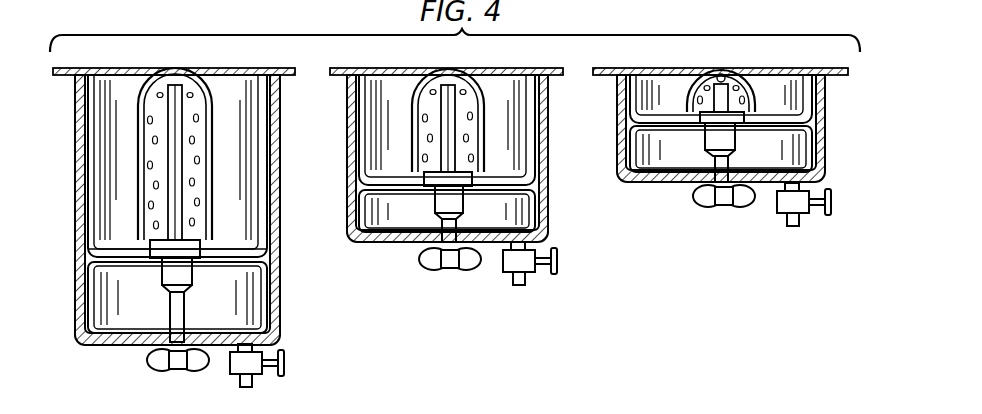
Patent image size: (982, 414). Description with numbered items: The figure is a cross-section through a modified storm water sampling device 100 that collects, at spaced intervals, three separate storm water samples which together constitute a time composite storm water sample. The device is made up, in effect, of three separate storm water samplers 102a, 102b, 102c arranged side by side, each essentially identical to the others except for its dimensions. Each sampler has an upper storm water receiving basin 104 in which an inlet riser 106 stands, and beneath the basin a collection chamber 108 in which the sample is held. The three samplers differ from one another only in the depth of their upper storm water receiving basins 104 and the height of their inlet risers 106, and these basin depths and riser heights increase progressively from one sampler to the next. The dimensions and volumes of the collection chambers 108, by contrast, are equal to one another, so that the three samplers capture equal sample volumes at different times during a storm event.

The modified storm water sampling device 100 is at (772, 18).
The storm water sampler 102a is at (826, 125).
The storm water sampler 102b is at (577, 152).
The storm water sampler 102c is at (278, 190).
The upper storm water receiving basin 104 is at (378, 90).
The inlet riser 106 is at (183, 127).
The sampler collection chamber 108 is at (243, 297).